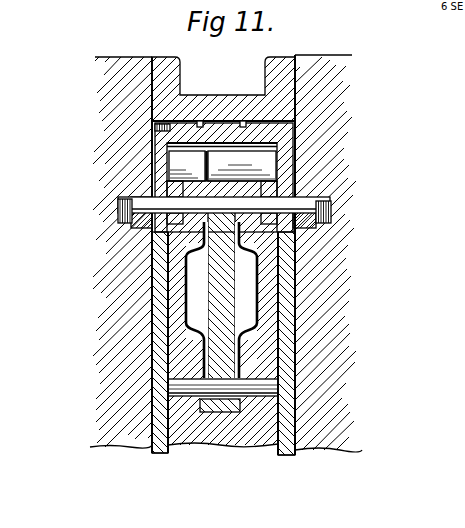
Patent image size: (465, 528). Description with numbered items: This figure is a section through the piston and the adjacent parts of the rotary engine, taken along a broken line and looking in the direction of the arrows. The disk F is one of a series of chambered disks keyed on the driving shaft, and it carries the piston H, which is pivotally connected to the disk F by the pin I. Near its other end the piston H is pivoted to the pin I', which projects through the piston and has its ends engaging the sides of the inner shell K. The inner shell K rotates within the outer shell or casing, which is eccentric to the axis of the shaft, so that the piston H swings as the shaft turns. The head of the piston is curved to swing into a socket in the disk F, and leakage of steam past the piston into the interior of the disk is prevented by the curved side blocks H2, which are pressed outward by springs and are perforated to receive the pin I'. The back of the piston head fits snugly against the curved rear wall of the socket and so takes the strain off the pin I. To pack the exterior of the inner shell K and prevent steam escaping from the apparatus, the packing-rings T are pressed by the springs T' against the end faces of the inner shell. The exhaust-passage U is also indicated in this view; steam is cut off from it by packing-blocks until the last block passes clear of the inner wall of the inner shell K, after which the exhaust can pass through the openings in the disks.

The piston H is at (235, 286).
The curved side blocks H2 is at (364, 278).
The packing-rings T is at (212, 225).
The springs T' is at (213, 201).
The pin I is at (259, 273).
The pin I' is at (162, 343).
The exhaust-passage U is at (200, 312).
The inner shell K is at (168, 386).
The disk F is at (190, 447).